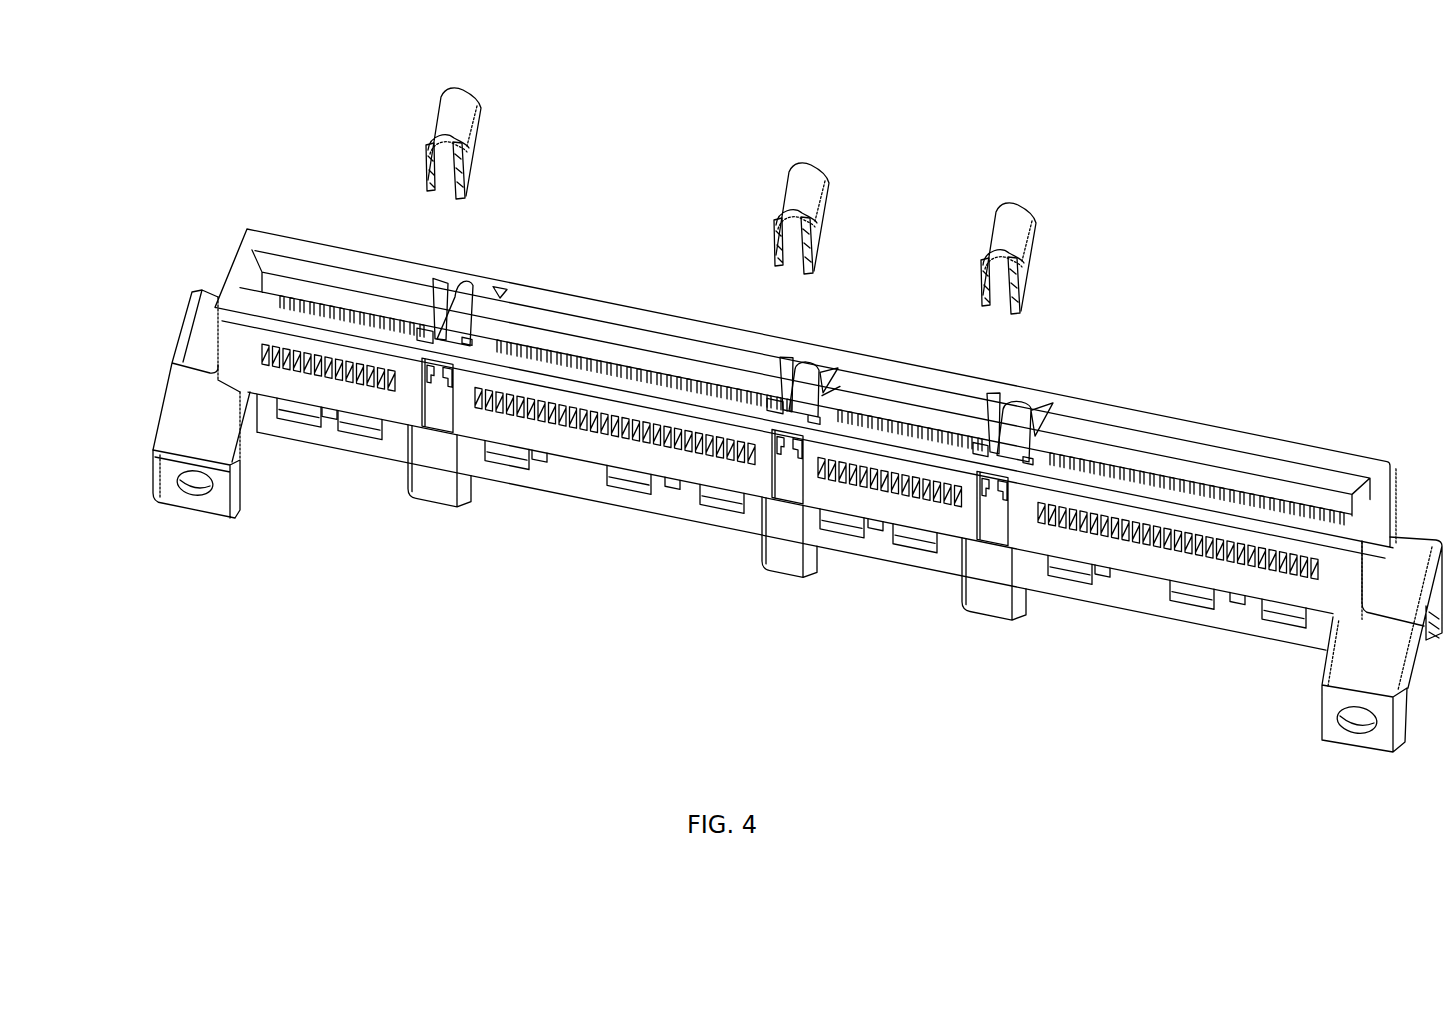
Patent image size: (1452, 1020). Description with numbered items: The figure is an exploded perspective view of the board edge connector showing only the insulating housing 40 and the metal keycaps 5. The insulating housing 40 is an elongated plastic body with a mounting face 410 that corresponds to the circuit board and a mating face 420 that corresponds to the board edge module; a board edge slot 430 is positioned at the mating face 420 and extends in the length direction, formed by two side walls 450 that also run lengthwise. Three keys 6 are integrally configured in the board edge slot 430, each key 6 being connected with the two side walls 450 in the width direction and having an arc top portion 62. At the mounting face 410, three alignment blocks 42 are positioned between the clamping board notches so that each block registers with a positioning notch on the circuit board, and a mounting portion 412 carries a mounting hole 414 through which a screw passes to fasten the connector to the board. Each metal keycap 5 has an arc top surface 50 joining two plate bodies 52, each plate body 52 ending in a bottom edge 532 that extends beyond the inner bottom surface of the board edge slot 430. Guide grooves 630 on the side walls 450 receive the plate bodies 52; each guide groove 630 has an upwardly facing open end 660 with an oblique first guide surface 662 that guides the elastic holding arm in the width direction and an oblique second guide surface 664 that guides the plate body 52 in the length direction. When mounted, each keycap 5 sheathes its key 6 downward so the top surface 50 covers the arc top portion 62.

The insulating housing 40 is at (186, 417).
The mounting face 410 is at (288, 438).
The mounting portion 412 is at (172, 500).
The mounting hole 414 is at (200, 489).
The alignment block 42 is at (433, 490).
The mating face 420 is at (320, 245).
The board edge slot 430 is at (512, 338).
The side wall 450 is at (1320, 603).
The metal keycap 5 is at (817, 224).
The top surface 50 is at (450, 119).
The plate body 52 is at (428, 156).
The bottom edge 532 is at (1041, 300).
The key 6 is at (815, 350).
The arc top portion 62 is at (454, 300).
The guide groove 630 is at (988, 418).
The open end 660 is at (791, 378).
The first guide surface 662 is at (799, 367).
The second guide surface 664 is at (435, 278).